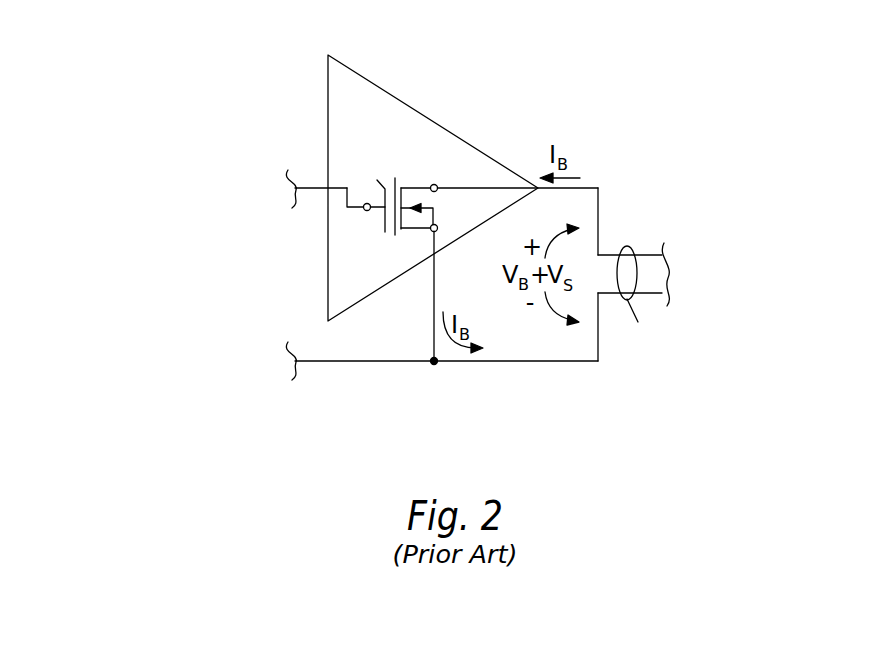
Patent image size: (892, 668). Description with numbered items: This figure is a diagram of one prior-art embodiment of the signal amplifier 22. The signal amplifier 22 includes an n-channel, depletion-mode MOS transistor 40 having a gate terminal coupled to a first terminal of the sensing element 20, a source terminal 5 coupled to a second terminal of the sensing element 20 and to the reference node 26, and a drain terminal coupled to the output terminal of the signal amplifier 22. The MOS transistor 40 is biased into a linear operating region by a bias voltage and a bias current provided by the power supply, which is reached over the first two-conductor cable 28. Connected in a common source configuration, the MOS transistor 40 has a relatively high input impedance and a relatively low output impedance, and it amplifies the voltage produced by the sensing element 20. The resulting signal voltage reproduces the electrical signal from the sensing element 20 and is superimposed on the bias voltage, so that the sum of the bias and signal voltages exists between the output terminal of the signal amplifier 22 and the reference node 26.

The signal amplifier 22 is at (420, 112).
The sensing element 20 is at (305, 273).
The MOS transistor 40 is at (402, 192).
The source terminal 5 is at (444, 228).
The reference node 26 is at (433, 364).
The first two-conductor cable 28 is at (677, 293).